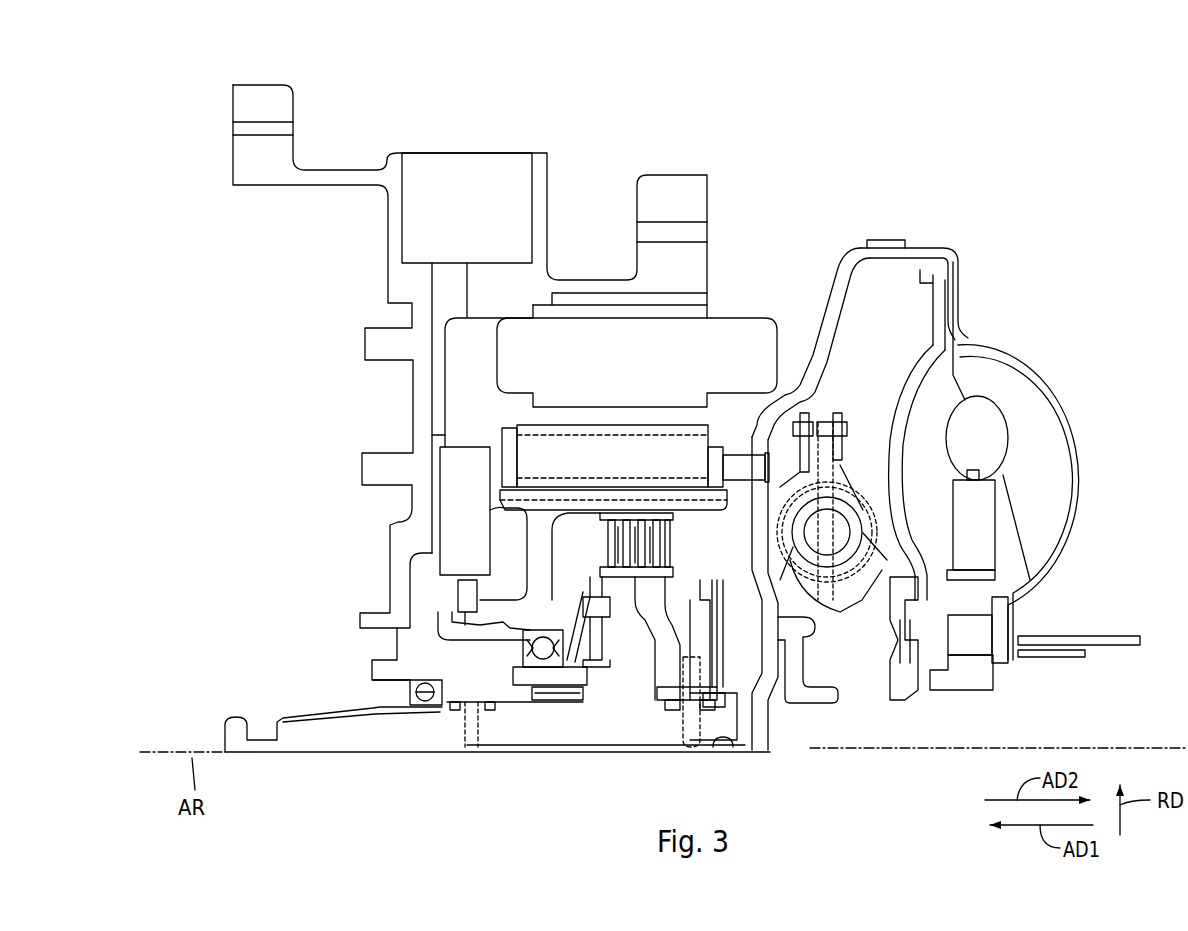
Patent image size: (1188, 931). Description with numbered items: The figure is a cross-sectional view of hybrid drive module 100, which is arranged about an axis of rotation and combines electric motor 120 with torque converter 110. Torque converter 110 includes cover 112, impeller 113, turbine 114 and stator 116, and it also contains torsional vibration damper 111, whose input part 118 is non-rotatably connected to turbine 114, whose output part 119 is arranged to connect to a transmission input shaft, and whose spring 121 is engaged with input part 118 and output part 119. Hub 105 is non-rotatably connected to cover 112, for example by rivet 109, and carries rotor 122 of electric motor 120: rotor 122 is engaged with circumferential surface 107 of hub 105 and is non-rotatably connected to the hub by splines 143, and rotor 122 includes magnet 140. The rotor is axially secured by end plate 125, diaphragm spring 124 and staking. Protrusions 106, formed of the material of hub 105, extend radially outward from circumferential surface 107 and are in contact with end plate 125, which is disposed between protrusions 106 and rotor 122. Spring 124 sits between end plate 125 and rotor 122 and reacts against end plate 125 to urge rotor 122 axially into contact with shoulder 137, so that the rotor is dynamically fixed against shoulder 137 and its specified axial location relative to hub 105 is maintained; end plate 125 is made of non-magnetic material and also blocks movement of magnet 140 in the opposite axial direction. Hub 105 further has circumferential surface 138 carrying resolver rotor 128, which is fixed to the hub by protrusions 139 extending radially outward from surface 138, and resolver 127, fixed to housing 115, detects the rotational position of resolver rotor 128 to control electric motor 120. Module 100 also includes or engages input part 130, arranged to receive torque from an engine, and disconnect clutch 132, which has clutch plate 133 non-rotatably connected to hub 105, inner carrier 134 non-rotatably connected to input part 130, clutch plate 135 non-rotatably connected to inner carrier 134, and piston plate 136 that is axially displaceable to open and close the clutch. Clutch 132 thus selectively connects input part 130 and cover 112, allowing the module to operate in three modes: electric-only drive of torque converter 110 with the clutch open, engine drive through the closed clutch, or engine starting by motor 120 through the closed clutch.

The hybrid drive module 100 is at (1012, 118).
The hub 105 is at (509, 617).
The protrusions 106 is at (436, 490).
The circumferential surface 107 is at (657, 487).
The rivet 109 is at (735, 489).
The torque converter 110 is at (980, 231).
The torsional vibration damper 111 is at (861, 405).
The cover 112 is at (827, 262).
The impeller 113 is at (1036, 371).
The turbine 114 is at (928, 484).
The housing 115 is at (479, 137).
The stator 116 is at (1004, 550).
The input part 118 is at (893, 577).
The output part 119 is at (823, 697).
The electric motor 120 is at (473, 398).
The spring 121 is at (857, 500).
The rotor 122 is at (697, 402).
The diaphragm spring 124 is at (513, 425).
The end plate 125 is at (495, 467).
The resolver 127 is at (438, 514).
The resolver rotor 128 is at (450, 592).
The input part 130 is at (403, 731).
The disconnect clutch 132 is at (549, 522).
The clutch plate 133 is at (599, 518).
The inner carrier 134 is at (664, 585).
The clutch plate 135 is at (630, 567).
The piston plate 136 is at (688, 655).
The shoulder 137 is at (740, 445).
The circumferential surface 138 is at (470, 613).
The protrusions 139 is at (445, 613).
The magnet 140 is at (685, 443).
The splines 143 is at (567, 493).